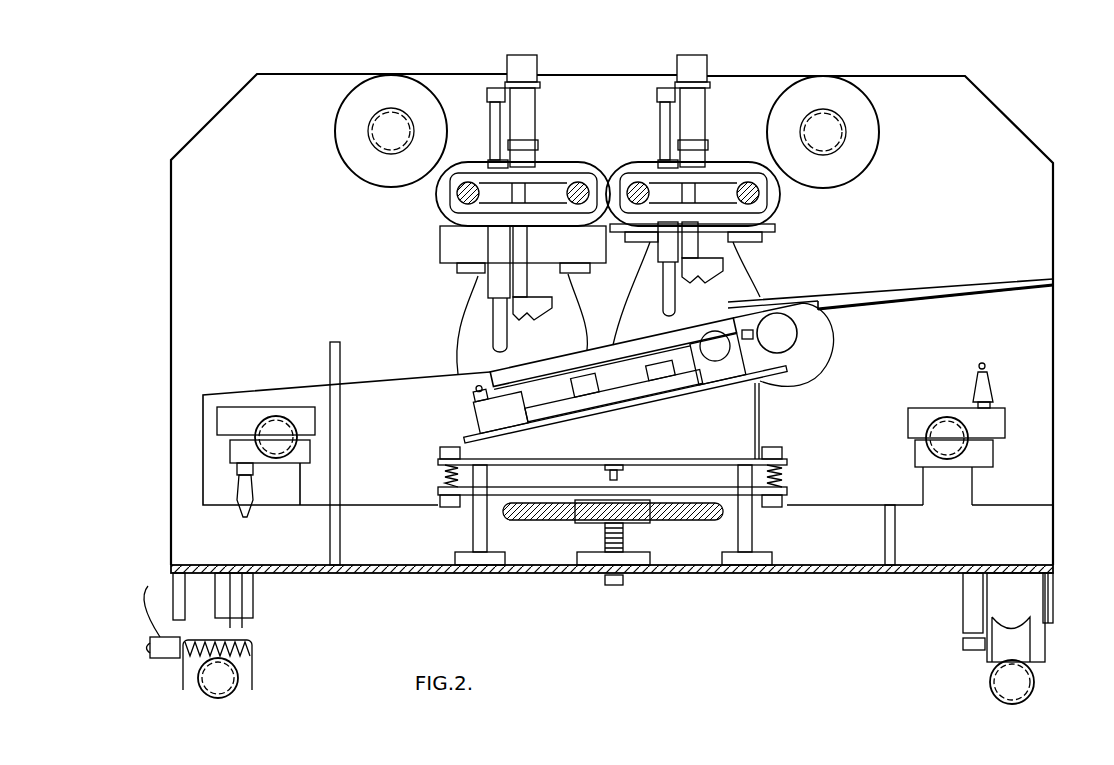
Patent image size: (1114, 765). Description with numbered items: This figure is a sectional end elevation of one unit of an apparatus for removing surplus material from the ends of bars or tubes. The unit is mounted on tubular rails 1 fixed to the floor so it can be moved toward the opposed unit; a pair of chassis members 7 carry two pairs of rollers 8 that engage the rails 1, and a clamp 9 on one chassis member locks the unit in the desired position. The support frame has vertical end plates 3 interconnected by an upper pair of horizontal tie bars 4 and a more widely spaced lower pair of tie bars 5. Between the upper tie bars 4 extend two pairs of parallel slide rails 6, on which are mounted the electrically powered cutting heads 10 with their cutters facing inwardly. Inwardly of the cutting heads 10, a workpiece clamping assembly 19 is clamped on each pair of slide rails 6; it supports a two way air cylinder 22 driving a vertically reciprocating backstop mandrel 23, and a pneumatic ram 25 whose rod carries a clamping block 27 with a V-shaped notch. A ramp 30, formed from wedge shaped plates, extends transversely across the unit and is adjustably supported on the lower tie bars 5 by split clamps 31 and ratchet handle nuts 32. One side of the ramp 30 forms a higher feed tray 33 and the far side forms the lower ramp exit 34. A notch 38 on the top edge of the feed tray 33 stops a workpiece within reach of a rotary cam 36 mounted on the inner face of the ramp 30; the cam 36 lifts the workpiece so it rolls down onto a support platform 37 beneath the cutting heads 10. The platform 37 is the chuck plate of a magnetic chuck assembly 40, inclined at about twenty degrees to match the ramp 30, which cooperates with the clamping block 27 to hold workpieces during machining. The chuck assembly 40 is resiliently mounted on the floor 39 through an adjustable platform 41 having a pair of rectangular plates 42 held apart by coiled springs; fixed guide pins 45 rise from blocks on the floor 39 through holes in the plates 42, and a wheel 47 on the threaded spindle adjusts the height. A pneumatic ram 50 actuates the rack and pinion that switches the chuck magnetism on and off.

The rails 1 is at (252, 683).
The vertical end plates 3 is at (993, 128).
The upper tie bars 4 is at (372, 129).
The lower tie bars 5 is at (268, 419).
The slide rails 6 is at (457, 194).
The chassis members 7 is at (248, 594).
The rollers 8 is at (1003, 642).
The clamp 9 is at (245, 660).
The cutting heads 10 is at (470, 328).
The workpiece clamping assembly 19 is at (540, 154).
The two way air cylinder 22 is at (490, 90).
The mandrel 23 is at (492, 345).
The pneumatic ram 25 is at (517, 62).
The clamping block 27 is at (538, 304).
The ramp 30 is at (376, 369).
The split clamps 31 is at (225, 443).
The ratchet handle nuts 32 is at (241, 500).
The feed tray 33 is at (1033, 272).
The ramp exit 34 is at (292, 394).
The rotary cam 36 is at (806, 357).
The support platform 37 is at (608, 348).
The notch 38 is at (818, 304).
The floor 39 is at (705, 574).
The magnetic chuck assembly 40 is at (472, 388).
The adjustable platform 41 is at (787, 478).
The rectangular plates 42 is at (702, 490).
The guide pins 45 is at (473, 533).
The wheel 47 is at (522, 513).
The pneumatic ram 50 is at (625, 393).